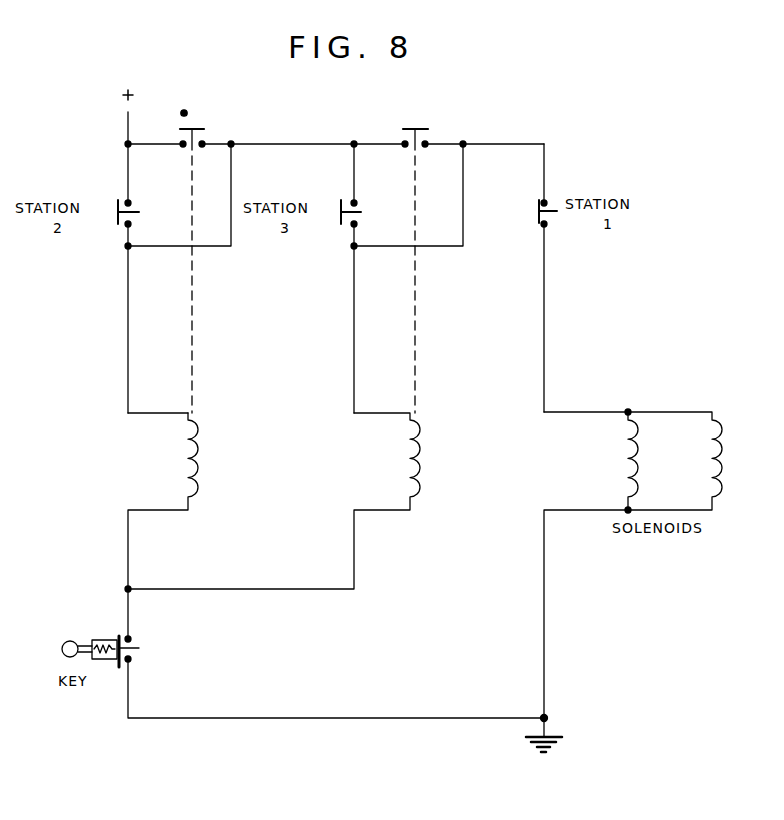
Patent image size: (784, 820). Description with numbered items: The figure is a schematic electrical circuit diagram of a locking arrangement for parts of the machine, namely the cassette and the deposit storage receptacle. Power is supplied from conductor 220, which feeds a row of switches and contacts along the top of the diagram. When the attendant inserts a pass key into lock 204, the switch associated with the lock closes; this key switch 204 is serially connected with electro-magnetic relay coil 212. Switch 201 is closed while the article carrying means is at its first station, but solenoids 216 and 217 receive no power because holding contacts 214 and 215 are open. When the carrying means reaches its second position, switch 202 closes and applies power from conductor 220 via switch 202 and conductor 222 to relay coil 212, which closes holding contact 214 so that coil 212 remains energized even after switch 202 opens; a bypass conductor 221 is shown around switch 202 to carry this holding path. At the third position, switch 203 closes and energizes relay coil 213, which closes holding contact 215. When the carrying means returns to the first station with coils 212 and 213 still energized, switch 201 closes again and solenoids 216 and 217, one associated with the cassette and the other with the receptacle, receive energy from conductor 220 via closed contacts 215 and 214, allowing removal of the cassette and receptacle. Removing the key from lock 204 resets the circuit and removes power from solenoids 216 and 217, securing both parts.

The switch 201 is at (539, 214).
The switch 202 is at (118, 222).
The switch 203 is at (341, 222).
The lock 204 is at (110, 640).
The electro-magnetic relay coil 212 is at (186, 452).
The relay coil 213 is at (410, 441).
The holding contact 214 is at (198, 128).
The holding contact 215 is at (423, 128).
The solenoid 216 is at (628, 467).
The solenoid 217 is at (712, 467).
The conductor 220 is at (128, 134).
The bypass conductor 221 is at (232, 248).
The conductor 222 is at (128, 373).